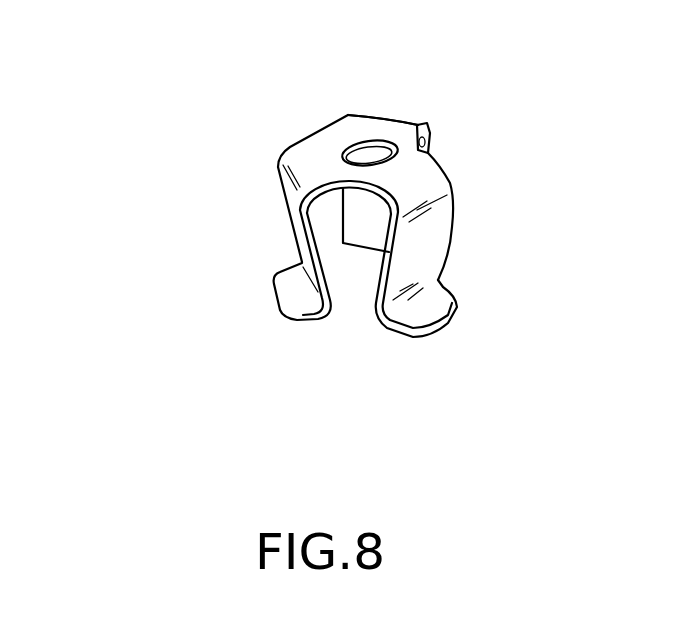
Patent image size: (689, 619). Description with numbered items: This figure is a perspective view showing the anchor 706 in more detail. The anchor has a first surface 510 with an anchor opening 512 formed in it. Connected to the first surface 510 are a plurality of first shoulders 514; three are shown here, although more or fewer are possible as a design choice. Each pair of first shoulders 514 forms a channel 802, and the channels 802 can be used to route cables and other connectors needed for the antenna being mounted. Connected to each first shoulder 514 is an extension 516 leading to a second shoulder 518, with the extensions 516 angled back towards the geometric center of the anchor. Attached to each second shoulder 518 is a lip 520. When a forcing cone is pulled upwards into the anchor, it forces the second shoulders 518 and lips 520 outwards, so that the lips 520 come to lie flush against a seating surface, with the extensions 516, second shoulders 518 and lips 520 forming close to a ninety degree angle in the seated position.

The anchor 706 is at (196, 104).
The first surface 510 is at (420, 168).
The anchor opening 512 is at (367, 153).
The first shoulders 514 is at (277, 158).
The extension 516 is at (433, 252).
The second shoulder 518 is at (353, 330).
The lip 520 is at (287, 317).
The channel 802 is at (338, 115).